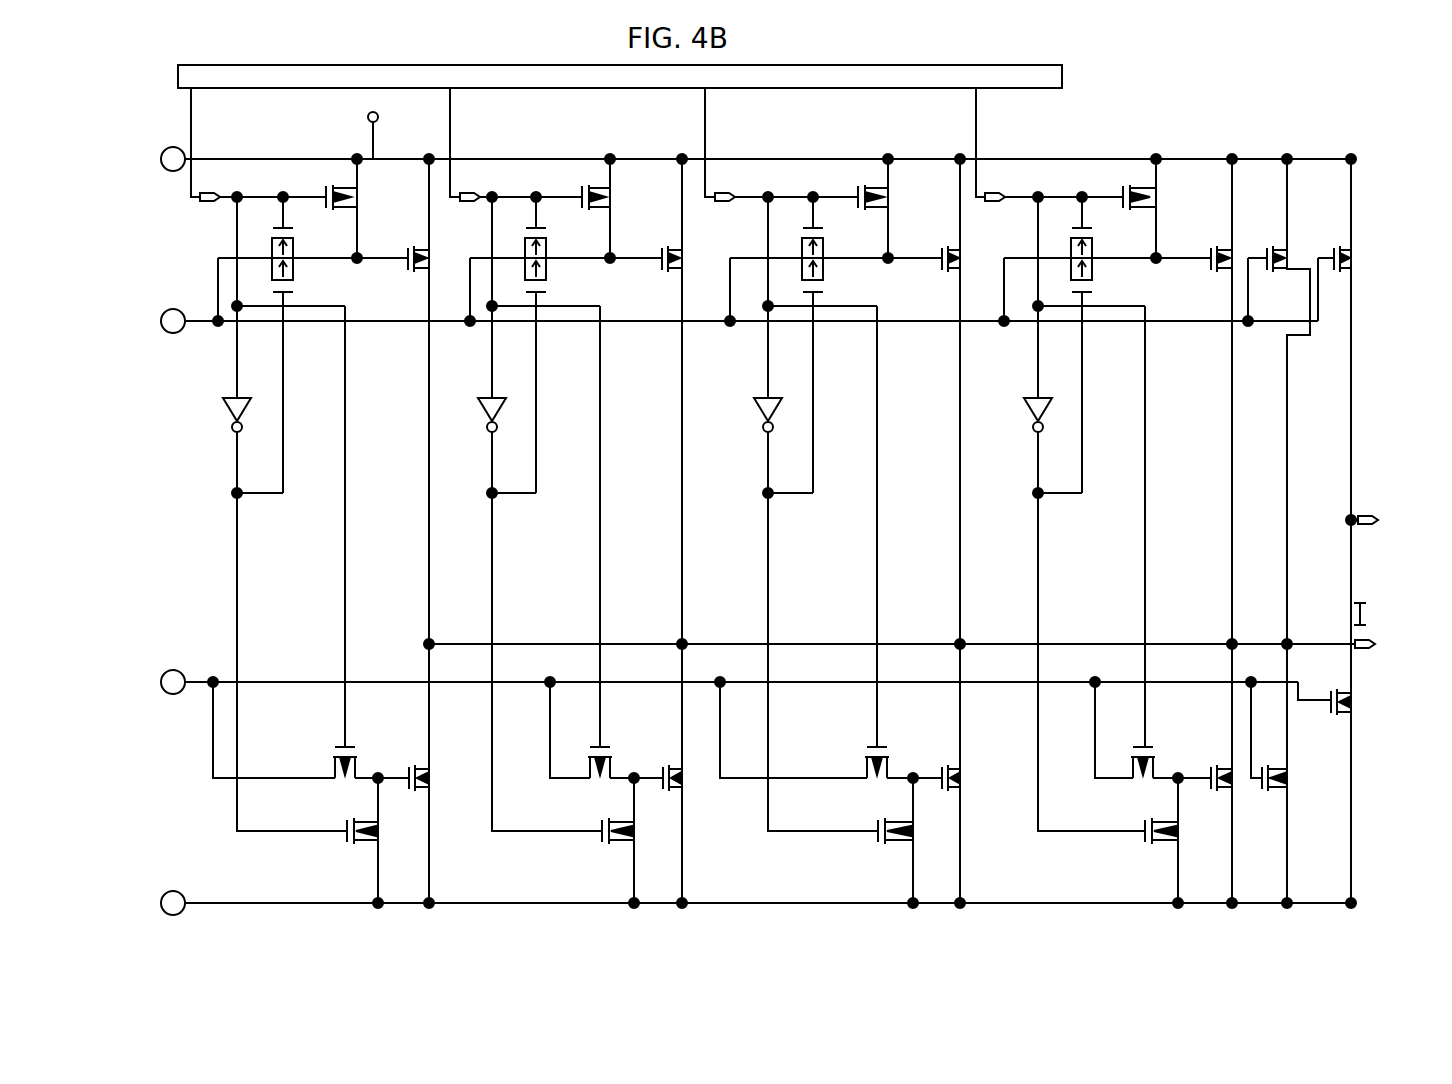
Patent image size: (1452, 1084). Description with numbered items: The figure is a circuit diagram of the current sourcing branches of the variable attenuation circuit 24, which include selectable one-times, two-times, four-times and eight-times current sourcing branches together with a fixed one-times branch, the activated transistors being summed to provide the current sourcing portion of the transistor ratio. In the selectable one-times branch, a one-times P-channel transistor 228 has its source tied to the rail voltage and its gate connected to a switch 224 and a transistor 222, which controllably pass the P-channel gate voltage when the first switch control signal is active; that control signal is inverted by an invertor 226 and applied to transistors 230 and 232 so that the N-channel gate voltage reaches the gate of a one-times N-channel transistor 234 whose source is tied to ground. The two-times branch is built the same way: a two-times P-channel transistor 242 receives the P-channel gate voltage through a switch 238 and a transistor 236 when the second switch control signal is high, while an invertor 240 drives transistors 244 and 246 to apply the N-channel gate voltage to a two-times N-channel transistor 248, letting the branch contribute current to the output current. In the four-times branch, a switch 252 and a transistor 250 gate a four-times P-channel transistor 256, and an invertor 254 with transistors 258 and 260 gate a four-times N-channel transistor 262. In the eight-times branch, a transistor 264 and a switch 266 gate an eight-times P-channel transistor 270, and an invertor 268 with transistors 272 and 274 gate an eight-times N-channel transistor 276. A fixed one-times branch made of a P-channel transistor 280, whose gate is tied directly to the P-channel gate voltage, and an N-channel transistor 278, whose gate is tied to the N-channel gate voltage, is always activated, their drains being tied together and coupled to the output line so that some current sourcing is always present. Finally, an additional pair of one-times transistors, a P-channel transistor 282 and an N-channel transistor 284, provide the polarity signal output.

The current source DAC cell circuit 24 is at (1189, 95).
The transistor 222 is at (325, 187).
The switch 224 is at (297, 268).
The invertor 226 is at (232, 413).
The 1× P-channel transistor 228 is at (407, 250).
The transistor 230 is at (358, 745).
The transistor 232 is at (348, 848).
The 1× N-channel transistor 234 is at (411, 772).
The transistor 236 is at (581, 187).
The switch 238 is at (550, 268).
The invertor 240 is at (487, 413).
The 2× P-channel transistor 242 is at (661, 250).
The transistor 244 is at (613, 745).
The transistor 246 is at (603, 848).
The 2× N-channel transistor 248 is at (665, 772).
The transistor 250 is at (858, 187).
The switch 252 is at (826, 268).
The invertor 254 is at (763, 413).
The 4× P-channel transistor 256 is at (941, 250).
The transistor 258 is at (890, 745).
The transistor 260 is at (879, 848).
The 4× N-channel transistor 262 is at (943, 772).
The transistor 264 is at (1122, 187).
The switch 266 is at (1095, 268).
The invertor 268 is at (1033, 413).
The 8× P-channel transistor 270 is at (1210, 250).
The transistor 272 is at (1153, 746).
The transistor 274 is at (1145, 848).
The 8× N-channel transistor 276 is at (1209, 790).
The 1× N-channel transistor 278 is at (1266, 784).
The 1× P-channel transistor 280 is at (1268, 238).
The 1× P-channel transistor 282 is at (1334, 240).
The 1× N-channel transistor 284 is at (1331, 710).